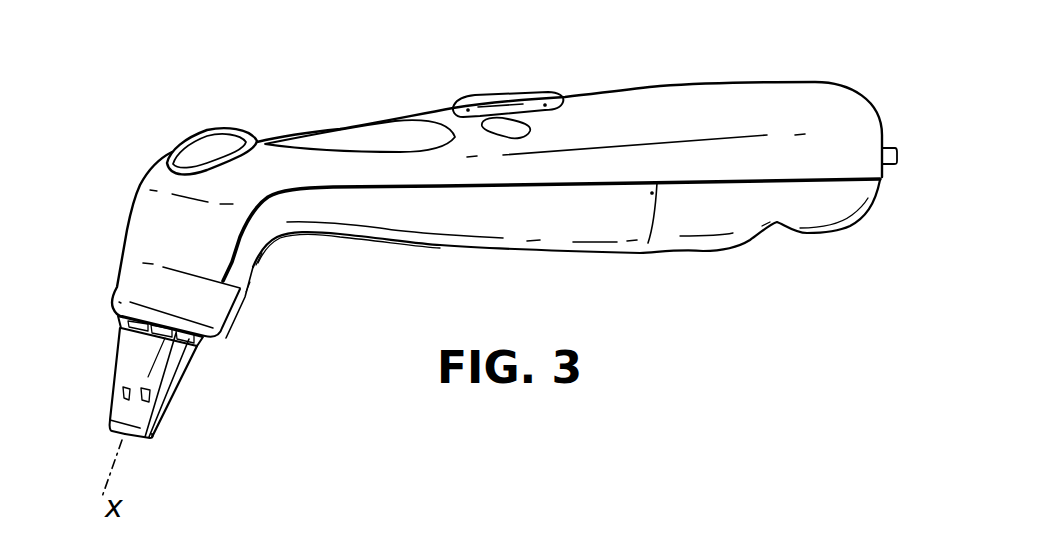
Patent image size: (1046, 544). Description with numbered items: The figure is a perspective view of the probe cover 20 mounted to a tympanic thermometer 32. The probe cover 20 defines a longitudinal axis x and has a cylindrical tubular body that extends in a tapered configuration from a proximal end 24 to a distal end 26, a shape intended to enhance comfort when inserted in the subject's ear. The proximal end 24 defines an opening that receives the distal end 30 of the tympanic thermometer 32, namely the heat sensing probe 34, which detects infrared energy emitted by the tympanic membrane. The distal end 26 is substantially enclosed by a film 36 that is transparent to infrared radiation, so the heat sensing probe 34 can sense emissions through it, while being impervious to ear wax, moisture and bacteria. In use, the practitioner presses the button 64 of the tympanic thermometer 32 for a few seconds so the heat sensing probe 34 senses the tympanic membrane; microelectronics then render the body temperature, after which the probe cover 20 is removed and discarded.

The probe cover 20 is at (183, 363).
The proximal end 24 is at (127, 333).
The distal end 26 is at (113, 417).
The distal end 30 is at (121, 280).
The tympanic thermometer 32 is at (608, 263).
The heat sensing probe 34 is at (150, 437).
The film 36 is at (112, 433).
The button 64 is at (203, 140).